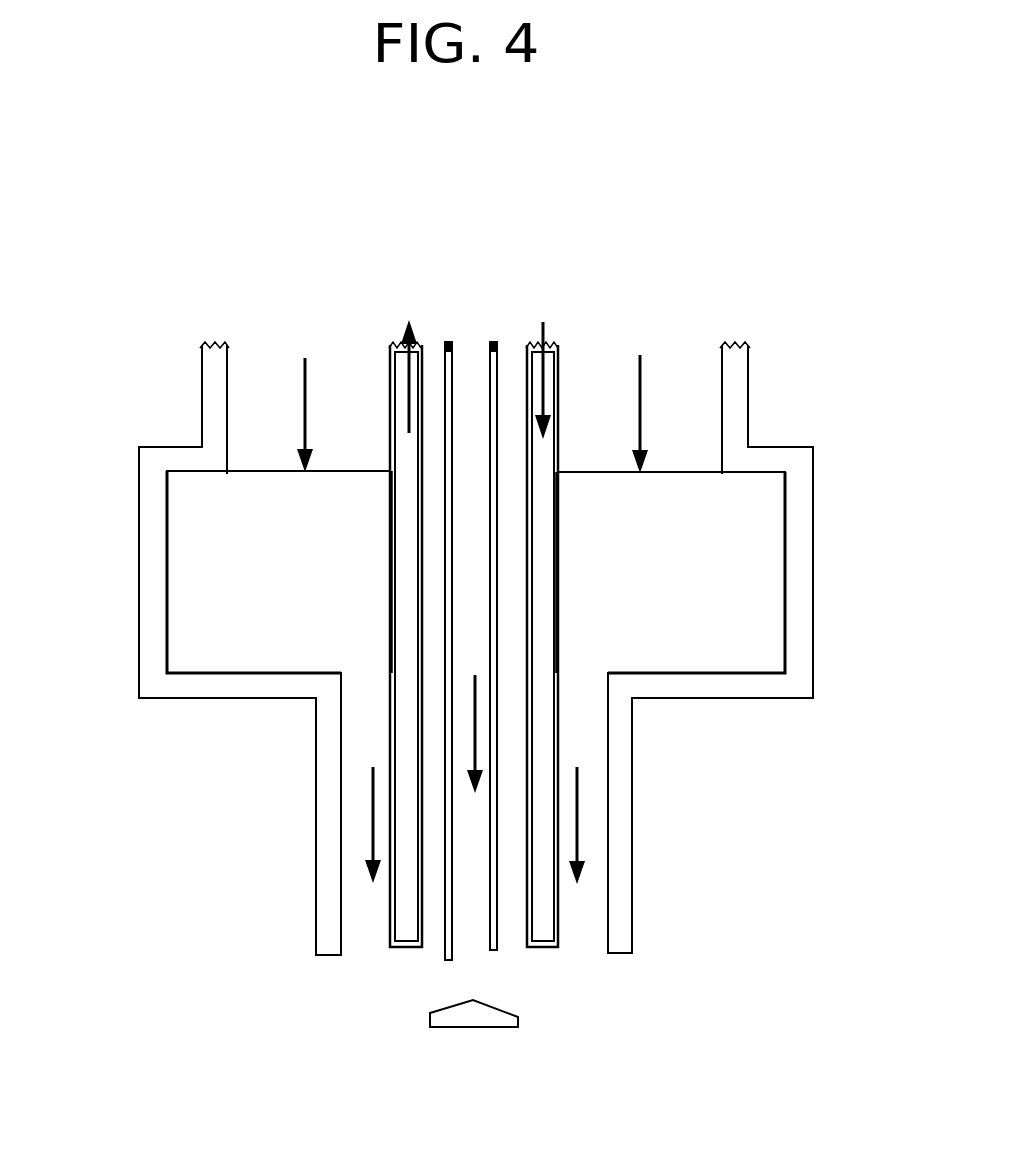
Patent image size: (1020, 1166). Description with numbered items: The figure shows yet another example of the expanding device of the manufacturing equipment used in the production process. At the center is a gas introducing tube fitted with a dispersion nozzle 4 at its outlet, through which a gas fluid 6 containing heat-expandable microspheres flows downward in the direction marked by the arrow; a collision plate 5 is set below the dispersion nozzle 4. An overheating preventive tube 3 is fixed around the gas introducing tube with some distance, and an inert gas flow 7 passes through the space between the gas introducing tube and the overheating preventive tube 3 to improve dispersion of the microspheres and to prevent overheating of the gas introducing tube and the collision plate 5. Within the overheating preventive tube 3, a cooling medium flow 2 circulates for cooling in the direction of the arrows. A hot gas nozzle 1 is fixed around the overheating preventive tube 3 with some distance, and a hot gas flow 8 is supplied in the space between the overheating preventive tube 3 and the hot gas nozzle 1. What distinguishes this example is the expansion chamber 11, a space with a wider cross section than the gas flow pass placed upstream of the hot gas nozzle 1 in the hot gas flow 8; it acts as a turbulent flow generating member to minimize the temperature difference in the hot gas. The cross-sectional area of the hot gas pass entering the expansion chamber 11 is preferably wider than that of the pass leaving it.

The hot gas nozzle 1 is at (340, 888).
The cooling medium flow 2 is at (550, 327).
The overheating preventive tube 3 is at (393, 663).
The dispersion nozzle 4 is at (450, 923).
The collision plate 5 is at (490, 1017).
The gas fluid containing heat-expandable microspheres 6 is at (475, 723).
The inert gas flow 7 is at (433, 937).
The hot gas flow 8 is at (472, 609).
The expansion chamber 11 is at (208, 577).